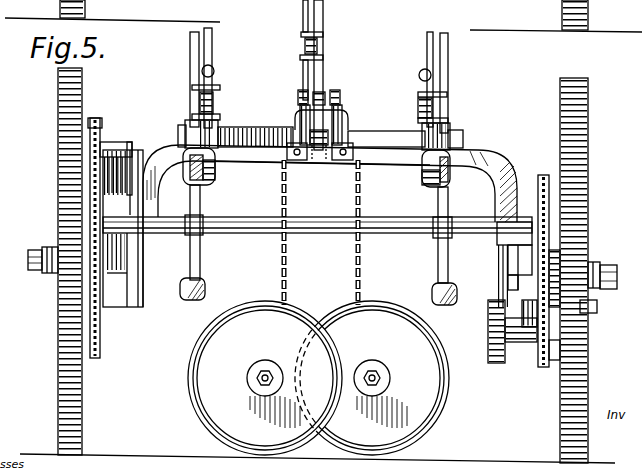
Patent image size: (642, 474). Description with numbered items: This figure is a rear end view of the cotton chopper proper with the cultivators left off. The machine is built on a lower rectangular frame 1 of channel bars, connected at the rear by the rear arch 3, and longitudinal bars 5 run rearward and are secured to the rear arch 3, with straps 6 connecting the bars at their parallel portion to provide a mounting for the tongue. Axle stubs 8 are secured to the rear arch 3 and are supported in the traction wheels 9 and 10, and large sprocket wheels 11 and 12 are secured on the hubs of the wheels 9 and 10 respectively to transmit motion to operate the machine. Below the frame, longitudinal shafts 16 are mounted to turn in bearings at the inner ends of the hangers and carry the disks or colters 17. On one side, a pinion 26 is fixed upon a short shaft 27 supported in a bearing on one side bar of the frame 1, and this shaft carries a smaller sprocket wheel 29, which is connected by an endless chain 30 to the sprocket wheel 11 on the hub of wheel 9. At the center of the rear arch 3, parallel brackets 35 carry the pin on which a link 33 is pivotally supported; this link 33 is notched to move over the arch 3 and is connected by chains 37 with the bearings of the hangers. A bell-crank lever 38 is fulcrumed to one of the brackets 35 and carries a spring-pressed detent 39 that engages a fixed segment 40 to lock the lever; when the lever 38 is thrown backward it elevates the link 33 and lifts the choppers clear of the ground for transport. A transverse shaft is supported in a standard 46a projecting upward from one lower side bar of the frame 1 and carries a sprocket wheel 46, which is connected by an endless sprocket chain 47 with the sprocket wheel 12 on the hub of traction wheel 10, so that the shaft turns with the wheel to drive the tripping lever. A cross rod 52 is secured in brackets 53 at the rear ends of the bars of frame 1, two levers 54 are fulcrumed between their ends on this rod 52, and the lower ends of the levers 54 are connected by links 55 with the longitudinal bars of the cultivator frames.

The lower rectangular frame 1 is at (118, 306).
The rear arch 3 is at (394, 160).
The longitudinal bars 5 is at (246, 127).
The straps 6 is at (350, 126).
The axle stubs 8 is at (50, 275).
The traction wheel 9 is at (588, 153).
The traction wheel 10 is at (58, 304).
The sprocket wheel 11 is at (543, 175).
The sprocket wheel 12 is at (100, 342).
The longitudinal shafts 16 is at (263, 370).
The disks or colters 17 is at (318, 378).
The pinion 26 is at (494, 364).
The short shaft 27 is at (520, 343).
The sprocket wheel 29 is at (549, 352).
The endless chain 30 is at (582, 306).
The link 33 is at (317, 160).
The parallel brackets 35 is at (300, 104).
The chains 37 is at (289, 263).
The bell-crank lever 38 is at (323, 48).
The spring-pressed detent 39 is at (312, 62).
The fixed segment 40 is at (304, 81).
The sprocket wheel 46 is at (97, 118).
The standard 46a is at (112, 143).
The endless sprocket chain 47 is at (88, 214).
The cross rod 52 is at (234, 234).
The brackets 53 is at (130, 250).
The levers 54 is at (200, 268).
The links 55 is at (192, 300).